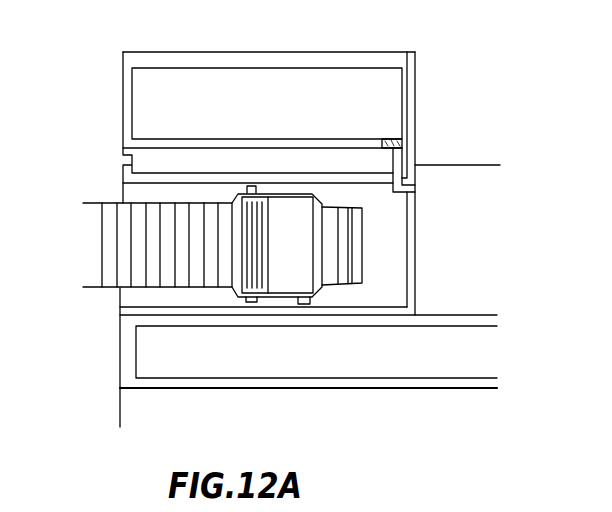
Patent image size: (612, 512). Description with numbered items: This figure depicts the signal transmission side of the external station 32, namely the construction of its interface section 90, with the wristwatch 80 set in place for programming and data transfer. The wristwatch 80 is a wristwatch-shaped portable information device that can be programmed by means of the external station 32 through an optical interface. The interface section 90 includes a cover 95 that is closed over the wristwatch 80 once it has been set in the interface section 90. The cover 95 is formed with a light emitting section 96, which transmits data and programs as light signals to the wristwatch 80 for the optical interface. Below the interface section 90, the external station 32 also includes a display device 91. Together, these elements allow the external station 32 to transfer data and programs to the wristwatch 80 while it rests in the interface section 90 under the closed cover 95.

The interface section 90 is at (84, 187).
The cover 95 is at (302, 34).
The light emitting section 96 is at (352, 85).
The external station 32 is at (486, 158).
The wristwatch 80 is at (320, 196).
The display device 91 is at (362, 366).